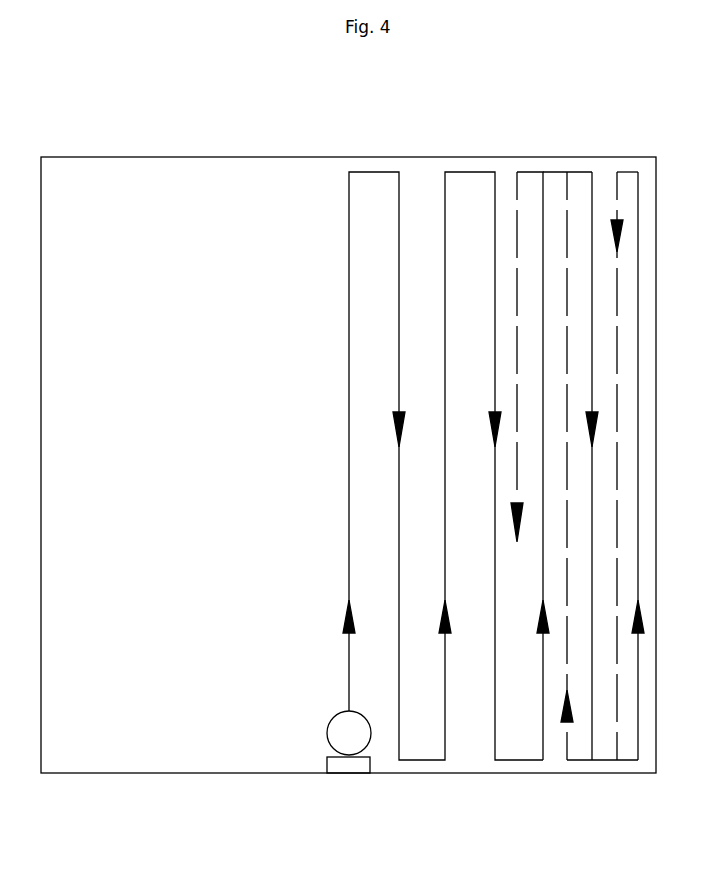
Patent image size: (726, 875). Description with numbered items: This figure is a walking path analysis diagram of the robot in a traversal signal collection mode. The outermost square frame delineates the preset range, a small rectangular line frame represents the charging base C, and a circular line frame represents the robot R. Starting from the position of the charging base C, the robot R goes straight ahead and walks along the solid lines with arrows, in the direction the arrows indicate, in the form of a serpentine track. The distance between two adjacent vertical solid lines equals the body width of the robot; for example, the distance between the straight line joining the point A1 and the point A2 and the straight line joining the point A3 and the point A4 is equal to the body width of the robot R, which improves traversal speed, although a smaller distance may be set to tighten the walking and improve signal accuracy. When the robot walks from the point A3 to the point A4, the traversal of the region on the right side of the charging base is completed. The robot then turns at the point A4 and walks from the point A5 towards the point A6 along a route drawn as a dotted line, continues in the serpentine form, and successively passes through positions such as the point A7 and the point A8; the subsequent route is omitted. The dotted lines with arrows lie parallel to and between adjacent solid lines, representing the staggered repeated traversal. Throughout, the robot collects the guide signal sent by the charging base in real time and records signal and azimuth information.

The point A1 is at (592, 172).
The point A2 is at (592, 773).
The point A3 is at (638, 773).
The point A4 is at (638, 172).
The point A5 is at (617, 172).
The point A6 is at (617, 773).
The point A7 is at (563, 773).
The point A8 is at (567, 172).
The robot R is at (349, 733).
The charging base C is at (348, 765).